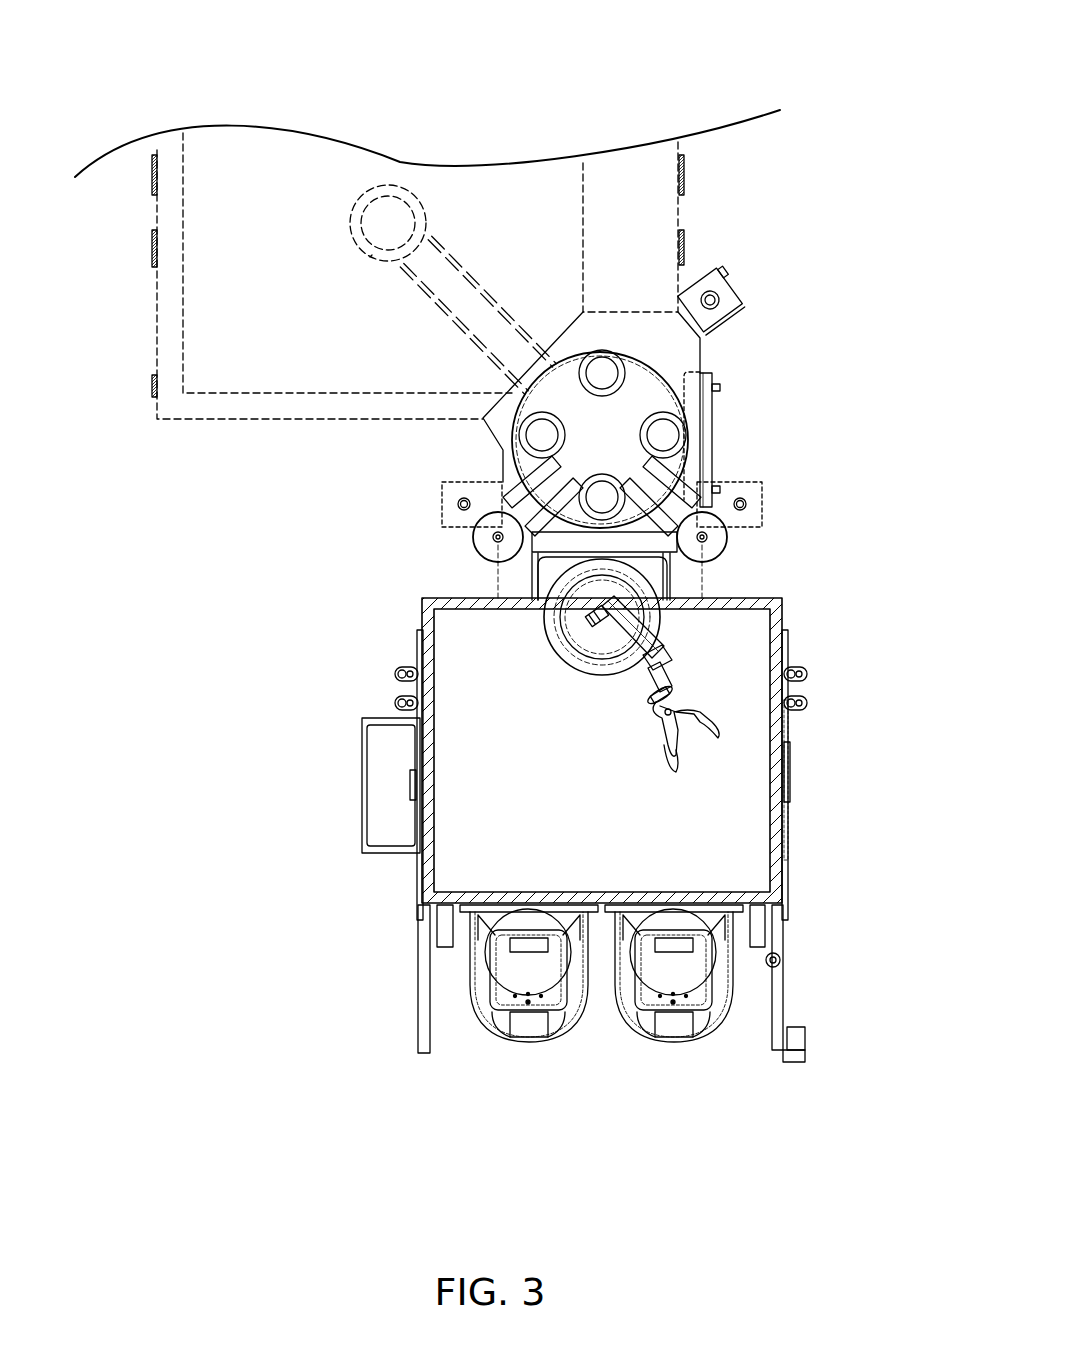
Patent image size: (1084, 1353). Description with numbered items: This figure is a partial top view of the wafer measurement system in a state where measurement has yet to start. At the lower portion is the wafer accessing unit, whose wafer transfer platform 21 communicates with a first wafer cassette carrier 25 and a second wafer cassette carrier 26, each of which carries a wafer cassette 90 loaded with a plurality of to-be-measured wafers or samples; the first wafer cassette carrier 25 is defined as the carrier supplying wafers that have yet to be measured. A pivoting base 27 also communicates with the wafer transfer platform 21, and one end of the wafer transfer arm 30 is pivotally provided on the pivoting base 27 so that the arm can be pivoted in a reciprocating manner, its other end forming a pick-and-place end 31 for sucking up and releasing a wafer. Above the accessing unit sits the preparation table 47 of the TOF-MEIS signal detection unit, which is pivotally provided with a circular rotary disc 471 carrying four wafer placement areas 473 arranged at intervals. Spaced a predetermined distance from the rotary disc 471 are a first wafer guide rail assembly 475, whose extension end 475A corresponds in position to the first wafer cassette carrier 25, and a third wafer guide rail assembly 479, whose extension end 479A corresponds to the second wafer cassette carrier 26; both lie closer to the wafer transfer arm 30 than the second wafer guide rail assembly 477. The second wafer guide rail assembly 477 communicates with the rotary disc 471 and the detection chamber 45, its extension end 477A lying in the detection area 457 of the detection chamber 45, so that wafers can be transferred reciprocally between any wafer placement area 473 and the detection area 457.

The detection chamber 45 is at (177, 168).
The detection area 457 is at (372, 188).
The second wafer guide rail assembly 477 is at (457, 262).
The extension end 477A is at (370, 257).
The preparation table 47 is at (608, 382).
The circular rotary disc 471 is at (650, 360).
The wafer placement areas 473 is at (612, 356).
The first wafer guide rail assembly 475 is at (680, 480).
The third wafer guide rail assembly 479 is at (527, 477).
The extension end 475A is at (727, 541).
The extension end 479A is at (476, 540).
The pivoting base 27 is at (548, 572).
The wafer transfer platform 21 is at (753, 832).
The wafer transfer arm 30 is at (668, 666).
The pick-and-place end 31 is at (738, 732).
The second wafer cassette carrier 26 is at (527, 1040).
The first wafer cassette carrier 25 is at (673, 1040).
The wafer cassettes 90 is at (483, 963).